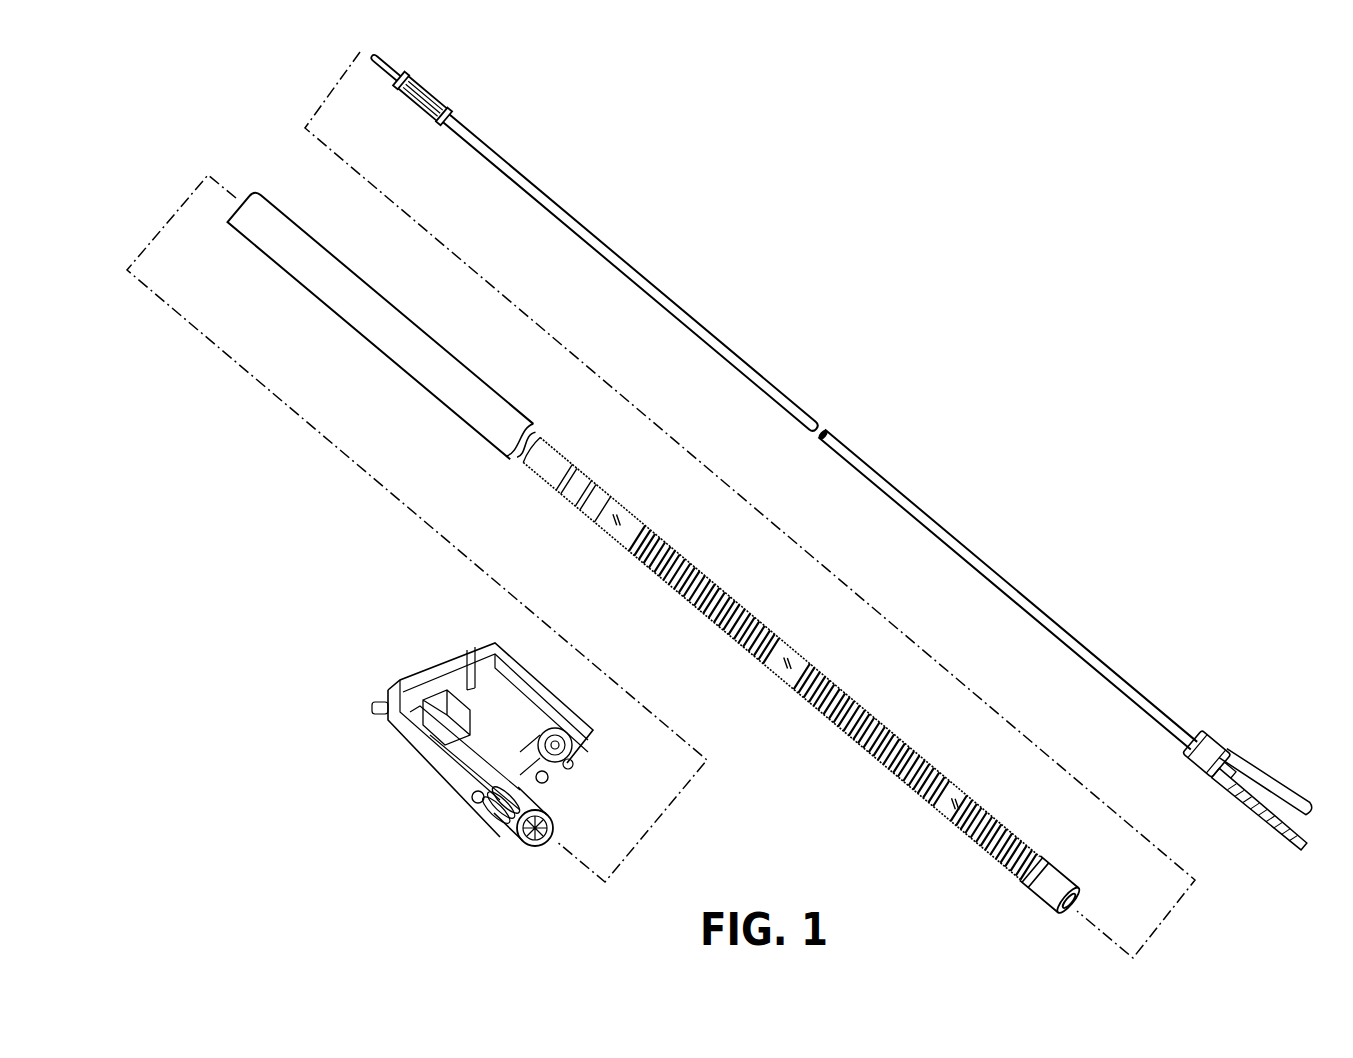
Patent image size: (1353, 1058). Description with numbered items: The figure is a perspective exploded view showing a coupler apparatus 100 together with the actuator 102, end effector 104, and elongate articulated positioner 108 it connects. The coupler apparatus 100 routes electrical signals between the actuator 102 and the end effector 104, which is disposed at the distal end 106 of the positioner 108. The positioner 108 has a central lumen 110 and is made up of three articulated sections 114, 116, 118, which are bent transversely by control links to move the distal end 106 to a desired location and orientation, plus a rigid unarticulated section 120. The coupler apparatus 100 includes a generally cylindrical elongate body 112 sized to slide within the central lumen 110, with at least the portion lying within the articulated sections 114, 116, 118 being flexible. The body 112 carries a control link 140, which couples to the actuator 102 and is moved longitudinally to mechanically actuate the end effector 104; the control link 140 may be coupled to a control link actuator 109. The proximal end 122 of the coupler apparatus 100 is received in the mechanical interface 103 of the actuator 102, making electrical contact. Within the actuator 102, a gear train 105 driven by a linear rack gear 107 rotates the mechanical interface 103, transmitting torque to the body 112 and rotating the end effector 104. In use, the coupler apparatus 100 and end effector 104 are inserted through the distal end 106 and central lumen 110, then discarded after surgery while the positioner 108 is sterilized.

The coupler apparatus 100 is at (858, 425).
The actuator 102 is at (507, 775).
The mechanical interface 103 is at (549, 846).
The end effector 104 is at (1240, 772).
The gear train 105 is at (479, 803).
The distal end 106 is at (1059, 905).
The linear rack gear 107 is at (586, 758).
The elongate articulated positioner 108 is at (733, 676).
The control link actuator 109 is at (432, 727).
The central lumen 110 is at (1070, 900).
The elongate body 112 is at (1008, 580).
The first articulated section 114 is at (720, 581).
The second articulated section 116 is at (889, 723).
The third articulated section 118 is at (1004, 825).
The rigid unarticulated section 120 is at (372, 344).
The proximal end 122 is at (436, 89).
The control link 140 is at (393, 64).